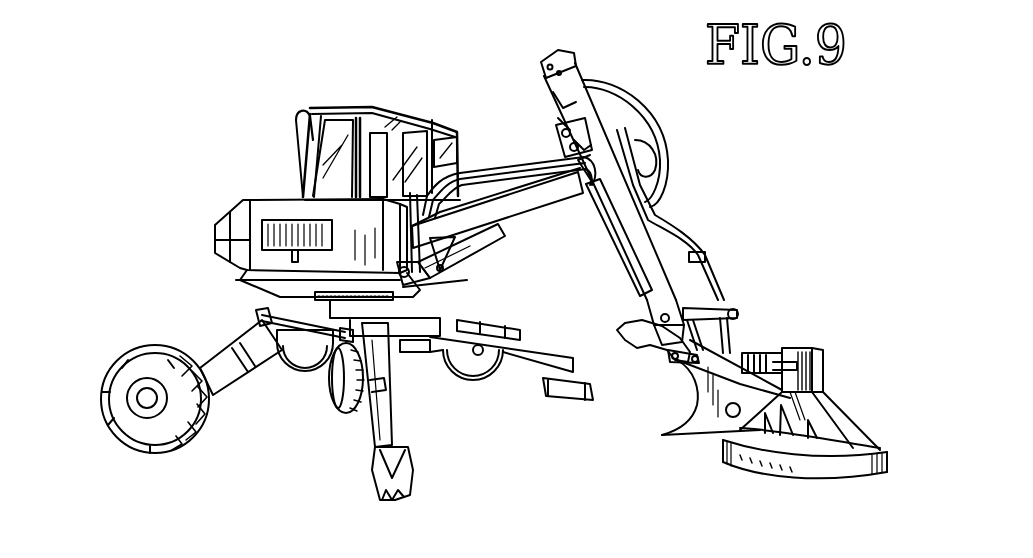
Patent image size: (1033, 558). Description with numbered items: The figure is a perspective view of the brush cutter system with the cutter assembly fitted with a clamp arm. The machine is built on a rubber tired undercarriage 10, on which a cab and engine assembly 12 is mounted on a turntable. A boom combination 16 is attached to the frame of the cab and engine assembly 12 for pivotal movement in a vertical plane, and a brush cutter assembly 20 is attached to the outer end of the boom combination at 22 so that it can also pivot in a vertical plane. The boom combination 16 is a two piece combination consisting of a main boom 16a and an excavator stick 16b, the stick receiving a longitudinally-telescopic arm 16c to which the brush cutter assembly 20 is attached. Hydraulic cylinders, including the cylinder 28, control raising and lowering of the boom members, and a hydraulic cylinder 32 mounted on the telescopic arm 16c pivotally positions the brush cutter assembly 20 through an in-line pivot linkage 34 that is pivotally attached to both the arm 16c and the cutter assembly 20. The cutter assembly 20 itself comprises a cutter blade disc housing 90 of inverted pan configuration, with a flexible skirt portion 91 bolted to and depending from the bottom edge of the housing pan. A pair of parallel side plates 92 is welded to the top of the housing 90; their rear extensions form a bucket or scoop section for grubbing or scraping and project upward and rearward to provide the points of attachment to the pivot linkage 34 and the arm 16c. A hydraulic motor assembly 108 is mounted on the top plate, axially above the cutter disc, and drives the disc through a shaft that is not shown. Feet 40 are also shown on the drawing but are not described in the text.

The rubber tired undercarriage 10 is at (294, 414).
The cab and engine assembly 12 is at (358, 100).
The boom combination 16 is at (668, 130).
The main boom 16a is at (544, 202).
The excavator stick 16b is at (612, 228).
The longitudinally-telescopic arm 16c is at (652, 313).
The brush cutter assembly 20 is at (812, 330).
The attachment point of brush cutter assembly 22 is at (683, 368).
The hydraulic cylinder 28 is at (478, 252).
The hydraulic cylinder 32 is at (396, 428).
The in-line pivot linkage 34 is at (236, 385).
The foot pad 40 is at (412, 482).
The cutter blade disc housing 90 is at (812, 450).
The flexible skirt portion 91 is at (755, 470).
The side plates 92 is at (698, 435).
The hydraulic motor assembly 108 is at (825, 370).